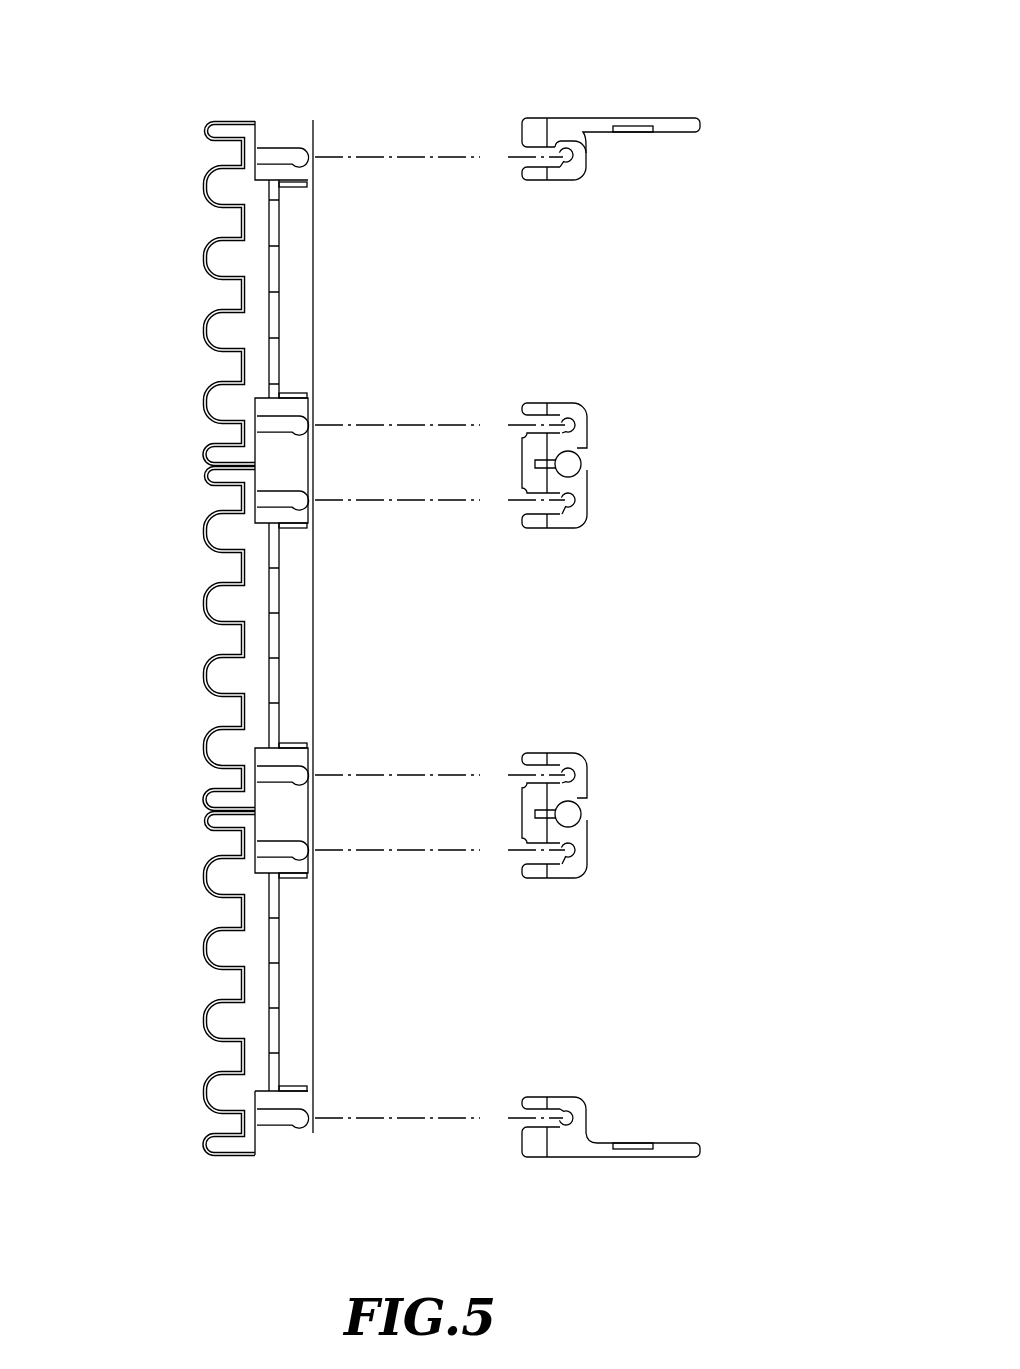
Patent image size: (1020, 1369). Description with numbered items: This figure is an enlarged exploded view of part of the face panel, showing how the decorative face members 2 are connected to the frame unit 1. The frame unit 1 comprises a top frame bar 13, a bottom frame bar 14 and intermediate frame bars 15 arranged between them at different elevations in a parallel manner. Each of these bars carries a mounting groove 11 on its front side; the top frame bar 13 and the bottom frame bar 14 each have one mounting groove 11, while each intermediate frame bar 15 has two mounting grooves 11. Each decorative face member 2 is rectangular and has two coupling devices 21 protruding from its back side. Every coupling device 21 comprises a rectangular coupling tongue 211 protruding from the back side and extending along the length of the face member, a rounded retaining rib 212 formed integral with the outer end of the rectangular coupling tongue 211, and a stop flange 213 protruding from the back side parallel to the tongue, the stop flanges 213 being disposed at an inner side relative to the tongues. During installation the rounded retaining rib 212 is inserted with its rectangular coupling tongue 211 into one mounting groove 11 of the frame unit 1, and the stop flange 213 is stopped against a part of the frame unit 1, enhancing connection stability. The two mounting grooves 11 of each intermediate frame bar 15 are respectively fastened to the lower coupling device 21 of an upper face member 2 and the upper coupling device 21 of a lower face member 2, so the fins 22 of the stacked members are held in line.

The frame unit 1 is at (636, 622).
The mounting groove 11 is at (576, 167).
The top frame bar 13 is at (585, 117).
The bottom frame bar 14 is at (603, 1157).
The intermediate frame bar 15 is at (588, 450).
The decorative face member 2 is at (185, 621).
The coupling device 21 is at (303, 607).
The rectangular coupling tongue 211 is at (267, 154).
The rounded retaining rib 212 is at (296, 143).
The stop flange 213 is at (299, 188).
The fins 22 is at (196, 312).